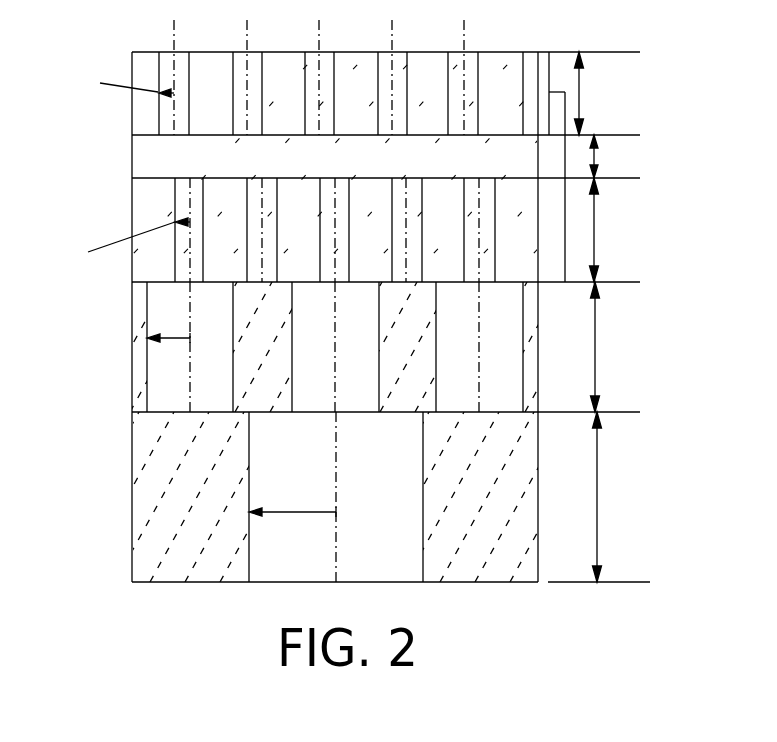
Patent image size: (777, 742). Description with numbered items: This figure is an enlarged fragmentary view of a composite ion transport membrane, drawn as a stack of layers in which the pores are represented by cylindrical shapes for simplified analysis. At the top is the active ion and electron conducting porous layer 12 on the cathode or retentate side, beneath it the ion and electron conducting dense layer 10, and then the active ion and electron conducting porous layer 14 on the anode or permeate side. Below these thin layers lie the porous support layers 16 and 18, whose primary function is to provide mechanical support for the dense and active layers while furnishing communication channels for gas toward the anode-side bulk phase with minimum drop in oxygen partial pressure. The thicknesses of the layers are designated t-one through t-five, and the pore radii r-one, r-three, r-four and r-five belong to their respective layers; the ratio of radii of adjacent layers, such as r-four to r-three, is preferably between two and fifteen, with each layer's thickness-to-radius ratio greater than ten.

The dense layer 10 is at (132, 179).
The active porous layer 12 is at (132, 111).
The active porous layer 14 is at (137, 262).
The porous support layer 16 is at (132, 370).
The porous support layer 18 is at (132, 478).